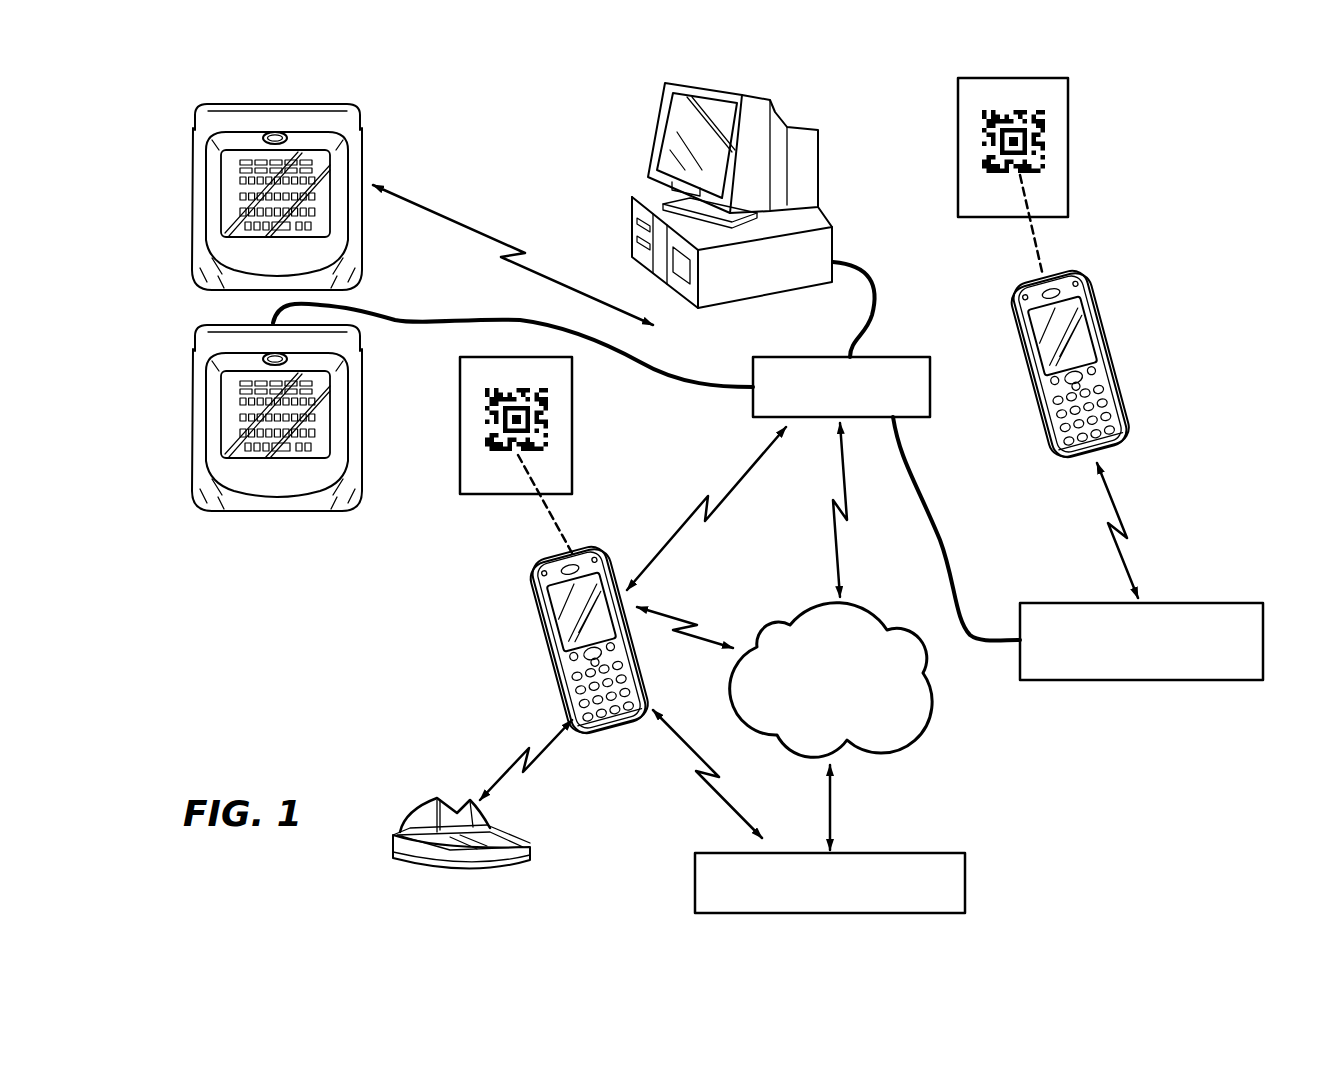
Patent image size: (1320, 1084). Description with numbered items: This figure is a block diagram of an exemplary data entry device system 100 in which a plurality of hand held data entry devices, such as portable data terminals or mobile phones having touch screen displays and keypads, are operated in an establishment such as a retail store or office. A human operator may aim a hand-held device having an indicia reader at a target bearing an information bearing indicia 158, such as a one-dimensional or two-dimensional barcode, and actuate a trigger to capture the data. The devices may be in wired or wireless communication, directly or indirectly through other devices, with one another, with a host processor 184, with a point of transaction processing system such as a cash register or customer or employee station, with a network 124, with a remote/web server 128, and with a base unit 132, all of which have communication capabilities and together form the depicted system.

The data entry device system 100 is at (700, 495).
The network 124 is at (923, 722).
The remote/web server 128 is at (902, 853).
The base unit 132 is at (405, 846).
The information bearing indicia 158 is at (546, 422).
The host processor 184 is at (892, 357).